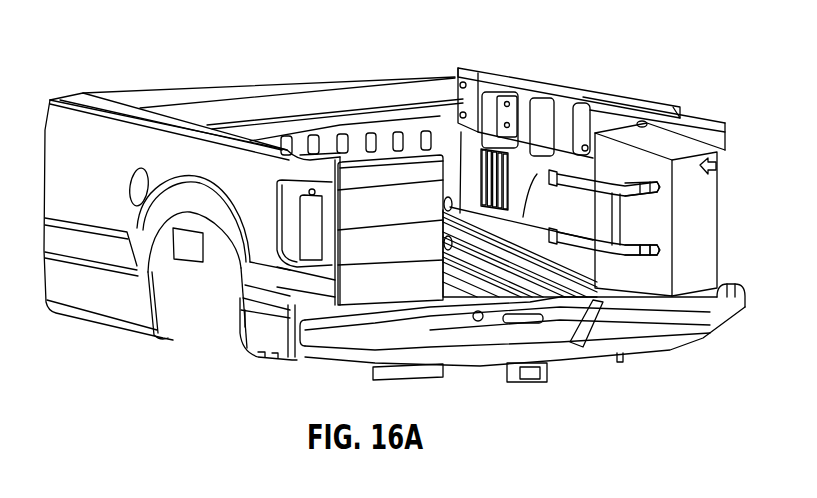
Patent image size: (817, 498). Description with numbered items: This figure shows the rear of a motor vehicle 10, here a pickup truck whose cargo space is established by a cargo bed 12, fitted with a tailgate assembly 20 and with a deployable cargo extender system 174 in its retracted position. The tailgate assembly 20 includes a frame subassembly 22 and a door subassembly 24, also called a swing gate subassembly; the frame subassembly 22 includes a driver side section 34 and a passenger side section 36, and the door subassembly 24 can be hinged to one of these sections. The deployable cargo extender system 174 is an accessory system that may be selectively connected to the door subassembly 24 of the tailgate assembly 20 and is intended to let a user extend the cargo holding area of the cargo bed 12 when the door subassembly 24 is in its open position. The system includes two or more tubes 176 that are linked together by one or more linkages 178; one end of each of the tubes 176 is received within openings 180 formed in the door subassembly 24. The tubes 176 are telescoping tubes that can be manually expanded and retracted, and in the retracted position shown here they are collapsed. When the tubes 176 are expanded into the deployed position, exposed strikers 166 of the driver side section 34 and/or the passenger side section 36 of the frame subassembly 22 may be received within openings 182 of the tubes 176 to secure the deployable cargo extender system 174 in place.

The motor vehicle 10 is at (622, 24).
The cargo bed 12 is at (507, 157).
The tailgate assembly 20 is at (714, 138).
The frame subassembly 22 is at (355, 148).
The door subassembly 24 is at (663, 150).
The driver side section 34 is at (367, 203).
The passenger side section 36 is at (718, 158).
The exposed strikers 166 is at (452, 200).
The deployable cargo extender system 174 is at (618, 232).
The tubes 176 is at (616, 185).
The linkages 178 is at (660, 248).
The openings 180 is at (660, 192).
The openings 182 is at (555, 172).